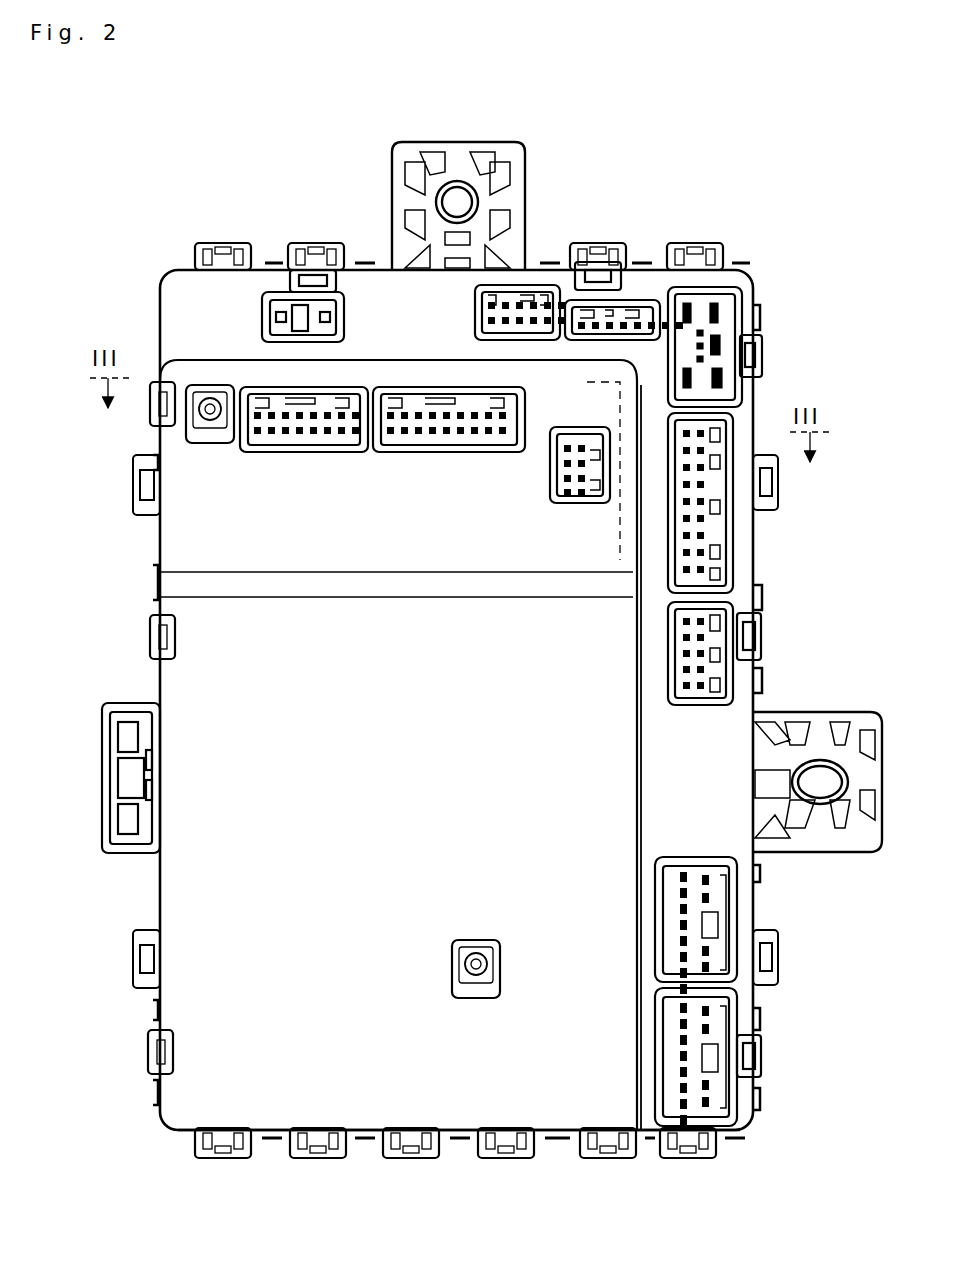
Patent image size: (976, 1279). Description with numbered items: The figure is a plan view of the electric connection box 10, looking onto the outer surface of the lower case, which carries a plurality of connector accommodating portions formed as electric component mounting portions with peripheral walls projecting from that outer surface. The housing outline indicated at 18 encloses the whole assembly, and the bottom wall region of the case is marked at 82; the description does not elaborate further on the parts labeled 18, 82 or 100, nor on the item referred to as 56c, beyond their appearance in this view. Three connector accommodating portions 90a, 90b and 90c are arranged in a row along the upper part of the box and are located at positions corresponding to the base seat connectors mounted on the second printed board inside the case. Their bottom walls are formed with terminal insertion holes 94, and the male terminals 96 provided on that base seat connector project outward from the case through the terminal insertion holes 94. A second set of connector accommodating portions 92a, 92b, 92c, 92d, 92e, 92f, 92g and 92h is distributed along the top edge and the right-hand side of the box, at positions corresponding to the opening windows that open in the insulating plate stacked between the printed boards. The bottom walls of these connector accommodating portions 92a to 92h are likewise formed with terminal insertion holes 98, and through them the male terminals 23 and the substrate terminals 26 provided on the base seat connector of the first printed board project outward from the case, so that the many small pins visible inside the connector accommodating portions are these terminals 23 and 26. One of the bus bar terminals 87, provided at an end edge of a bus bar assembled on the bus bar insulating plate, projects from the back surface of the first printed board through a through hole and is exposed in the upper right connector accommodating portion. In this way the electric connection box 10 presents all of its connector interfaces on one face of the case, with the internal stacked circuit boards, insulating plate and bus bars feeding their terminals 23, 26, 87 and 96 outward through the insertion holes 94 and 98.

The electric connection box 10 is at (752, 262).
The housing 18 is at (162, 270).
The male terminal 23 is at (300, 306).
The substrate terminal 26 is at (705, 345).
The terminal 56c is at (692, 310).
The bottom wall 82 is at (353, 1120).
The bus bar terminal 87 is at (712, 325).
The connector accommodating portion 90a is at (245, 450).
The connector accommodating portion 90b is at (418, 450).
The connector accommodating portion 90c is at (578, 502).
The connector accommodating portion 92a is at (275, 300).
The connector accommodating portion 92b is at (543, 298).
The connector accommodating portion 92c is at (640, 300).
The connector accommodating portion 92d is at (745, 320).
The connector accommodating portion 92e is at (728, 565).
The connector accommodating portion 92f is at (735, 690).
The connector accommodating portion 92g is at (735, 935).
The connector accommodating portion 92h is at (745, 1063).
The terminal insertion hole 94 is at (283, 432).
The male terminal 96 is at (272, 415).
The terminal insertion hole 98 is at (345, 270).
The connector portion 100 is at (480, 325).